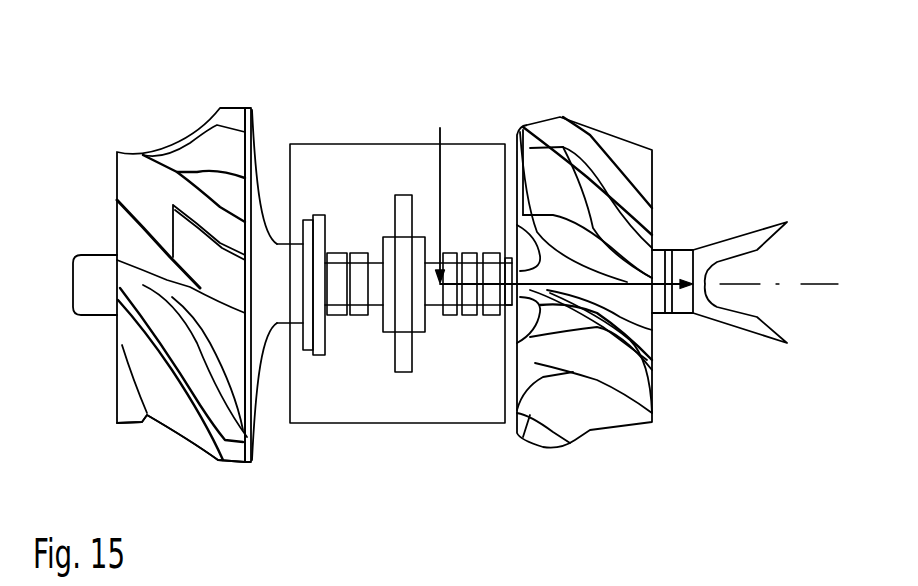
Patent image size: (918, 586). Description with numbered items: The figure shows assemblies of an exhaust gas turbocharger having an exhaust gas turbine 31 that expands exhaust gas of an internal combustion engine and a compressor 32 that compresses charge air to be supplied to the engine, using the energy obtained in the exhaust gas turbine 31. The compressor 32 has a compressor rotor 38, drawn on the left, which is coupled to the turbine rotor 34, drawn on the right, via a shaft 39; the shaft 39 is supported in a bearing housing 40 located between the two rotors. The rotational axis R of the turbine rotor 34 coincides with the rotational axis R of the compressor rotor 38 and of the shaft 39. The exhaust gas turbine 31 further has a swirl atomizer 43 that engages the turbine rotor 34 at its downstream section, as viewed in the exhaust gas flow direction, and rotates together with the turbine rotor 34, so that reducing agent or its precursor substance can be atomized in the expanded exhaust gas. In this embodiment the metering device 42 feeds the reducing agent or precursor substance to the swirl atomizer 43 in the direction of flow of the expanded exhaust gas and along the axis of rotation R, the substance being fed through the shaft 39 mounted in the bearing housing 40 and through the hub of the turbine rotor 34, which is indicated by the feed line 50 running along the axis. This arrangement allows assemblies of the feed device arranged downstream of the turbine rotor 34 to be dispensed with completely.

The exhaust gas turbine 31 is at (599, 225).
The compressor 32 is at (155, 455).
The turbine rotor 34 is at (634, 126).
The compressor rotor 38 is at (170, 135).
The shaft 39 is at (360, 303).
The bearing housing 40 is at (338, 138).
The metering device 42 is at (455, 178).
The swirl atomizer 43 is at (736, 228).
The axis of rotation 50 is at (438, 170).
The rotational axis R is at (815, 283).